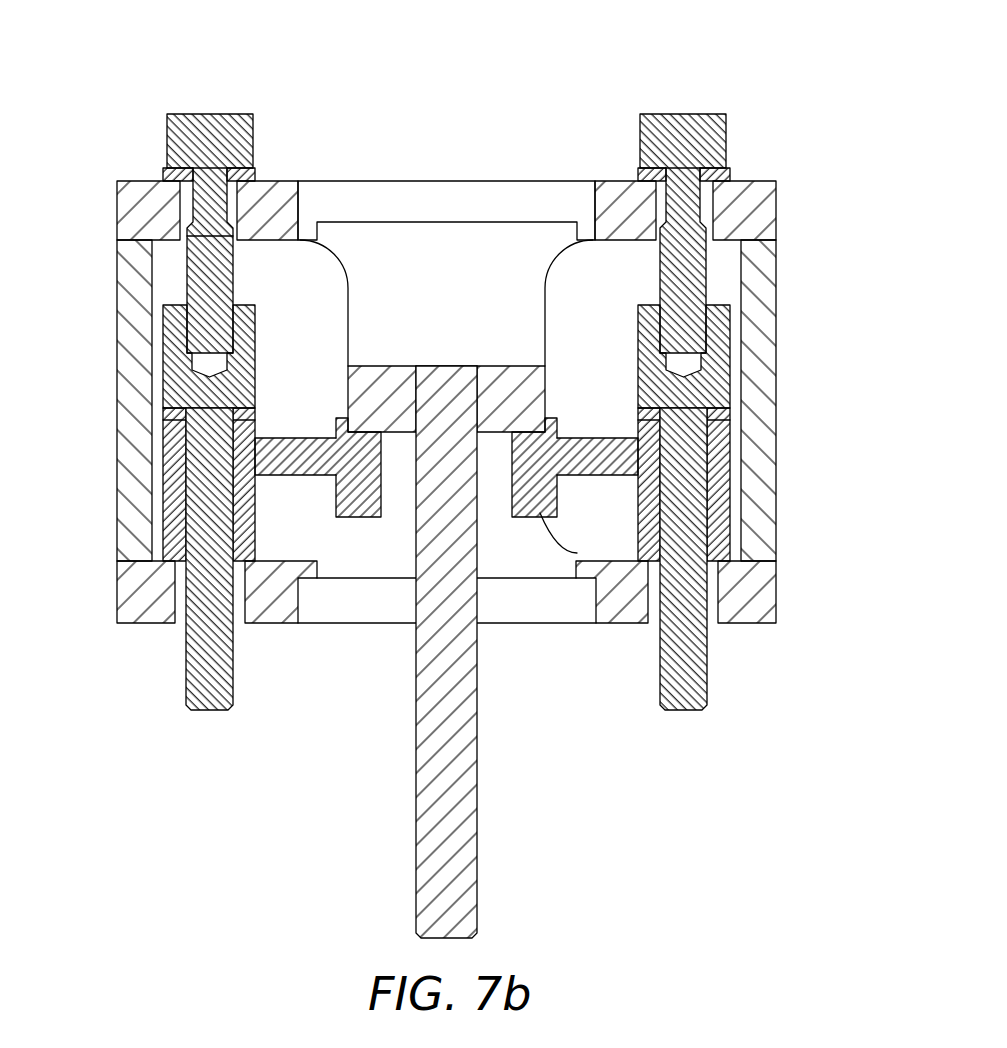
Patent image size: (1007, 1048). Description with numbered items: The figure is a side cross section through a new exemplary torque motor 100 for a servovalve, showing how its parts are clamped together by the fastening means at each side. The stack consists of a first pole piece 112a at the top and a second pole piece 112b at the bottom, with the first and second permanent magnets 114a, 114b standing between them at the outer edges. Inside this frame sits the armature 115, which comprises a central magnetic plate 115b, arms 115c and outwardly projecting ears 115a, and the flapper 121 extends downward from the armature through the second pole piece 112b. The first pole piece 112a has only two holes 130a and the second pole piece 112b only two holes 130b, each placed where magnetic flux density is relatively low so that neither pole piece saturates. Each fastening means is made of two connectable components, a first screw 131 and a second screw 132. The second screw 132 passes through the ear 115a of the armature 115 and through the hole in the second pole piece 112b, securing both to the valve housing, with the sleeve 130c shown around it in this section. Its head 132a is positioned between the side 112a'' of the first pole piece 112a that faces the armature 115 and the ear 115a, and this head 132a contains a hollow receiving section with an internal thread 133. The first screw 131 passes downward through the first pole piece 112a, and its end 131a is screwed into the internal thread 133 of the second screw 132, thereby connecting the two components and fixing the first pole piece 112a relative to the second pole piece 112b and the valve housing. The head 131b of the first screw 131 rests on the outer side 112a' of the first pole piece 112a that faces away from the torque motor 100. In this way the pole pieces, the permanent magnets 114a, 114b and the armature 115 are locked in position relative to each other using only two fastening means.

The torque motor 100 is at (578, 74).
The first pole piece 112a is at (489, 243).
The outer side of the first pole piece 112a' is at (446, 180).
The opposite side of the first pole piece 112a'' is at (453, 303).
The second pole piece 112b is at (770, 612).
The first permanent magnet 114a is at (127, 517).
The second permanent magnet 114b is at (768, 278).
The armature 115 is at (407, 678).
The ears 115a is at (648, 530).
The magnetic plate 115b is at (512, 366).
The arms 115c is at (600, 447).
The flapper 121 is at (472, 880).
The holes in first pole piece 130a is at (713, 215).
The holes in second pole piece 130b is at (720, 592).
The sleeve 130c is at (720, 513).
The first screw 131 is at (172, 135).
The end of the first screw 131a is at (205, 338).
The head of the first screw 131b is at (213, 120).
The second screw 132 is at (716, 393).
The head of the second screw 132a is at (180, 393).
The internal thread 133 is at (725, 338).